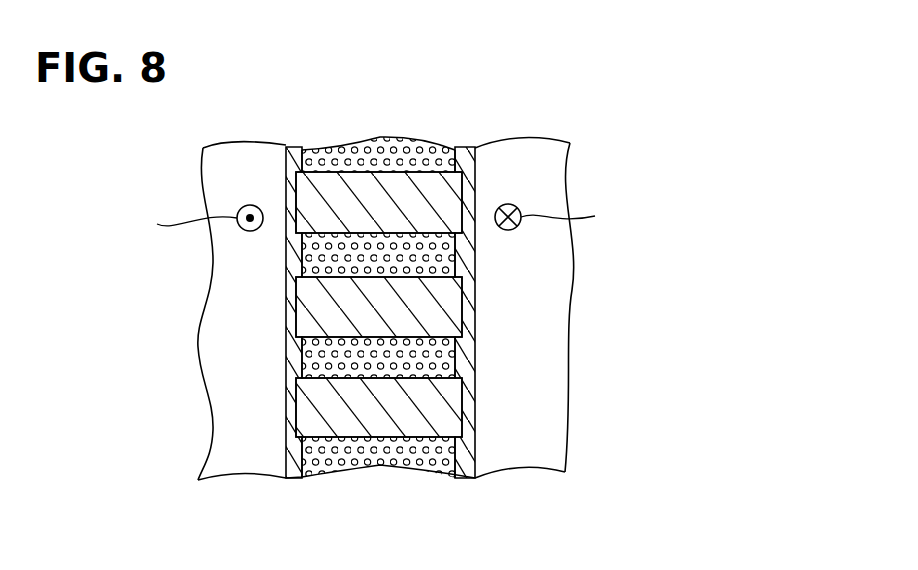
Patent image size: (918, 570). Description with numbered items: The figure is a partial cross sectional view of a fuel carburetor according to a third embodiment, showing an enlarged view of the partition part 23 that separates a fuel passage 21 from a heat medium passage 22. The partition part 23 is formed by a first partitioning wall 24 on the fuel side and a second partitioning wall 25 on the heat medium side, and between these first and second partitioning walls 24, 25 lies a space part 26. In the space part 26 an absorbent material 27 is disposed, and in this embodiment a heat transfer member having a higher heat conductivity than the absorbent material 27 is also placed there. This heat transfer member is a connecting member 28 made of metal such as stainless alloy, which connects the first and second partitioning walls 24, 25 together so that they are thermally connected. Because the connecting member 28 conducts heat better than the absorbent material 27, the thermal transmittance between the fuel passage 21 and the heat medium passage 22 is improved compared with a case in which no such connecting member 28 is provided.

The fuel passage 21 is at (237, 315).
The heat medium passage 22 is at (515, 333).
The partition part 23 is at (380, 252).
The first partitioning wall 24 is at (295, 158).
The second partitioning wall 25 is at (466, 158).
The space part 26 is at (370, 352).
The absorbent material 27 is at (300, 376).
The connecting member 28 is at (386, 467).